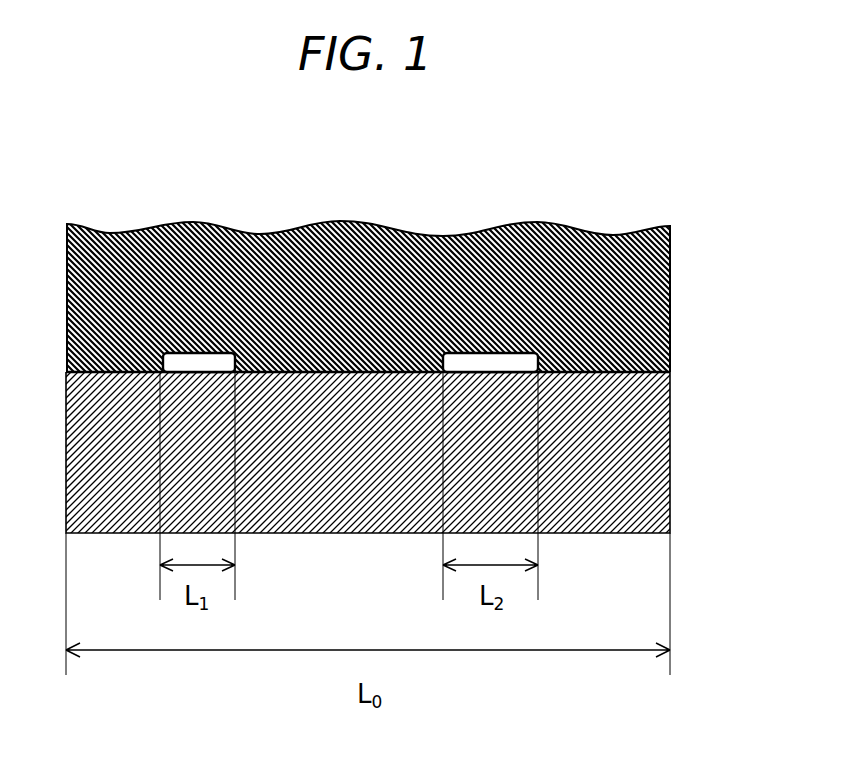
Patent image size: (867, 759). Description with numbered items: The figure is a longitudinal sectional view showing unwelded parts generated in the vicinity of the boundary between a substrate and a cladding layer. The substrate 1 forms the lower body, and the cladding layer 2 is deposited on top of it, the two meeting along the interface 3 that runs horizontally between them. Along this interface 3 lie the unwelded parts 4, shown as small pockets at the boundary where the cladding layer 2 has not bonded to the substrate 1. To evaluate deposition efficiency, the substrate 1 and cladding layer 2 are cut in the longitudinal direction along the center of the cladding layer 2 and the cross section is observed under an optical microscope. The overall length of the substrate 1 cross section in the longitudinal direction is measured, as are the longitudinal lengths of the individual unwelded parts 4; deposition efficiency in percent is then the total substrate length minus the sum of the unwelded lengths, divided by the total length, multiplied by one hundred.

The substrate 1 is at (657, 455).
The cladding layer 2 is at (655, 272).
The interface 3 is at (632, 372).
The unwelded part 4 is at (197, 362).